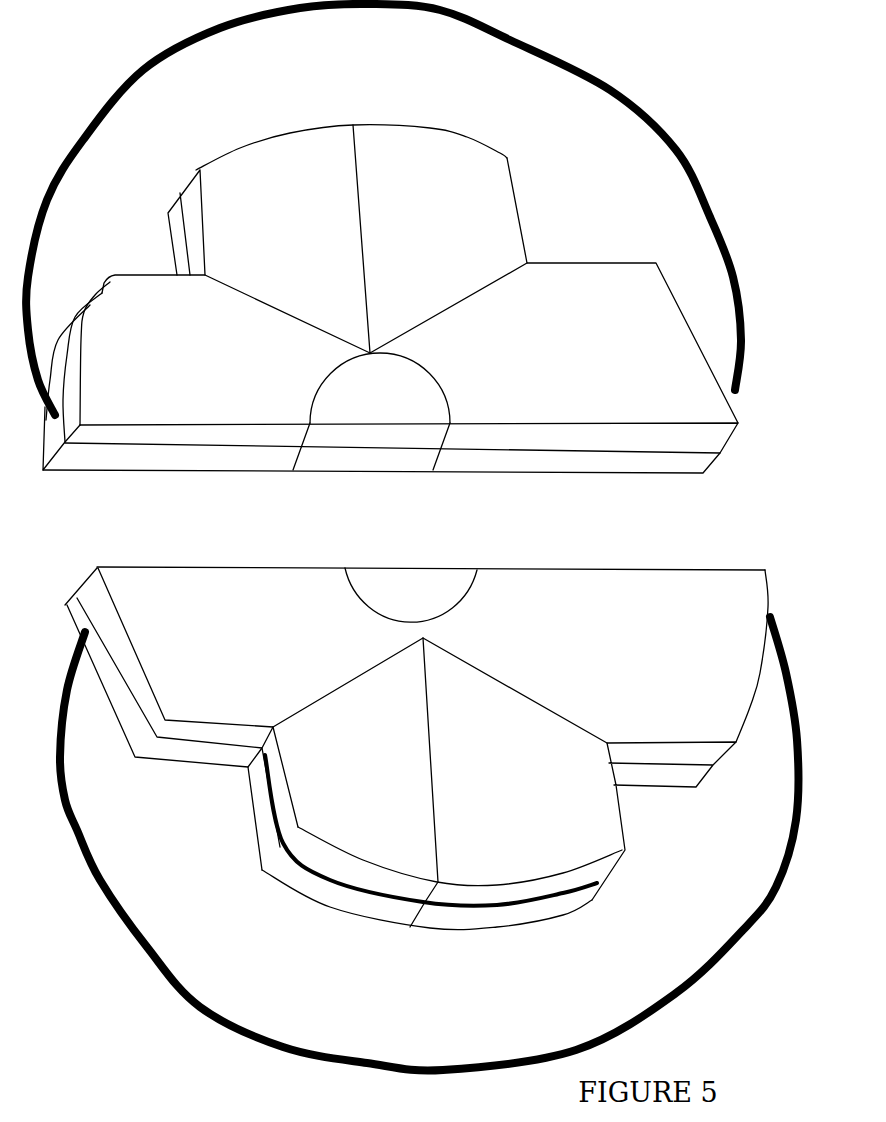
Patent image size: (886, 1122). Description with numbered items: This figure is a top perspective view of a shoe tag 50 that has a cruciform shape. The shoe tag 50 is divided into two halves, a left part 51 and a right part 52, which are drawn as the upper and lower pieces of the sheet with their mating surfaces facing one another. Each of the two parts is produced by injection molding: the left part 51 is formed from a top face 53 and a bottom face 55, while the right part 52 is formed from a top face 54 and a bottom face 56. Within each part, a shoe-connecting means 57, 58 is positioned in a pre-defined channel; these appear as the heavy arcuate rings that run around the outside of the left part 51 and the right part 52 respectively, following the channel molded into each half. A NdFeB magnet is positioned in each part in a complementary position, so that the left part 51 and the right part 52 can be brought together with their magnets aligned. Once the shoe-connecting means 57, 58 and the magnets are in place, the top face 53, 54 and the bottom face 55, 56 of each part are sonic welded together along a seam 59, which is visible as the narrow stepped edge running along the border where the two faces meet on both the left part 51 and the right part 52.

The shoe tag 50 is at (673, 67).
The left part 51 is at (283, 135).
The right part 52 is at (750, 712).
The top face 53 is at (721, 435).
The top face 54 is at (355, 872).
The bottom face 55 is at (683, 462).
The bottom face 56 is at (383, 912).
The shoe-connecting means 57 is at (143, 68).
The shoe-connecting means 58 is at (143, 943).
The seam 59 is at (185, 238).